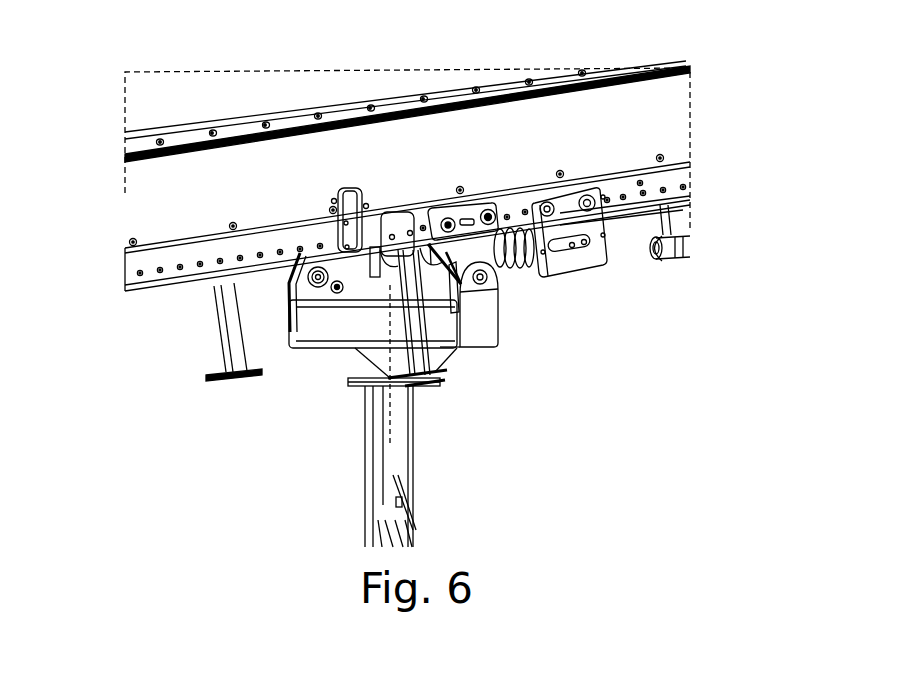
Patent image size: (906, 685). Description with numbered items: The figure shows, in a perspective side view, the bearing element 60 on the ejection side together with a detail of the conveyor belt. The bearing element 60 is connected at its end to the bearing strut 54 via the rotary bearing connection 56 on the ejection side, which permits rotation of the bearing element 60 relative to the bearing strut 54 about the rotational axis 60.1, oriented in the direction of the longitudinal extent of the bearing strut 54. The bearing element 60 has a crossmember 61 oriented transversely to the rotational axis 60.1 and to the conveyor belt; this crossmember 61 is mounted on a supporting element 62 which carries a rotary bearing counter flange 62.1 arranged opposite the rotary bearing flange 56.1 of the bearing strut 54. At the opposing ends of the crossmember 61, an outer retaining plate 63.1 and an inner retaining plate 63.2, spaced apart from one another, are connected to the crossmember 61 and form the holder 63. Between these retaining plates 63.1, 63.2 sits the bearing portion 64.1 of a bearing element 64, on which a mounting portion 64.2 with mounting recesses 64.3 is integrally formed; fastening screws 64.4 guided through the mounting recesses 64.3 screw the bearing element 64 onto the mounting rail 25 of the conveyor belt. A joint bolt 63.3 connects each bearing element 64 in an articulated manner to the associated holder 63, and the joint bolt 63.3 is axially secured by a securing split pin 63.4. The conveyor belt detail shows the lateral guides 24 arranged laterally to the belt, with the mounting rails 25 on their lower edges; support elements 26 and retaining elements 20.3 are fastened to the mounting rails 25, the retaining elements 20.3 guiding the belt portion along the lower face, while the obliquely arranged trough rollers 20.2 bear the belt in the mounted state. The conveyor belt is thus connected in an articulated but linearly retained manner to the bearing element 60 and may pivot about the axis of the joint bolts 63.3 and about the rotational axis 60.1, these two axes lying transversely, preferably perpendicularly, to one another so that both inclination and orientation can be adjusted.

The trough rollers 20.2 is at (566, 215).
The retaining elements 20.3 is at (620, 210).
The lateral guides 24 is at (668, 142).
The mounting rails 25 is at (670, 175).
The support elements 26 is at (223, 375).
The bearing strut 54 is at (393, 457).
The rotary bearing connection on the ejection side 56 is at (421, 462).
The rotary bearing flange on the ejection side 56.1 is at (355, 387).
The bearing element on the ejection side 60 is at (440, 235).
The rotational axis on the ejection side 60.1 is at (380, 297).
The crossmember on the ejection side 61 is at (348, 330).
The supporting element on the ejection side 62 is at (437, 378).
The rotary bearing counter flange on the ejection side 62.1 is at (432, 388).
The holder on the ejection side 63 is at (440, 201).
The outer retaining plate on the ejection side 63.1 is at (478, 342).
The inner retaining plate on the ejection side 63.2 is at (483, 320).
The joint bolt 63.3 is at (485, 277).
The securing split pin 63.4 is at (303, 250).
The bearing element 64 is at (350, 188).
The bearing portion 64.1 is at (392, 212).
The mounting portion 64.2 is at (462, 222).
The mounting recesses 64.3 is at (488, 215).
The fastening screws 64.4 is at (512, 232).